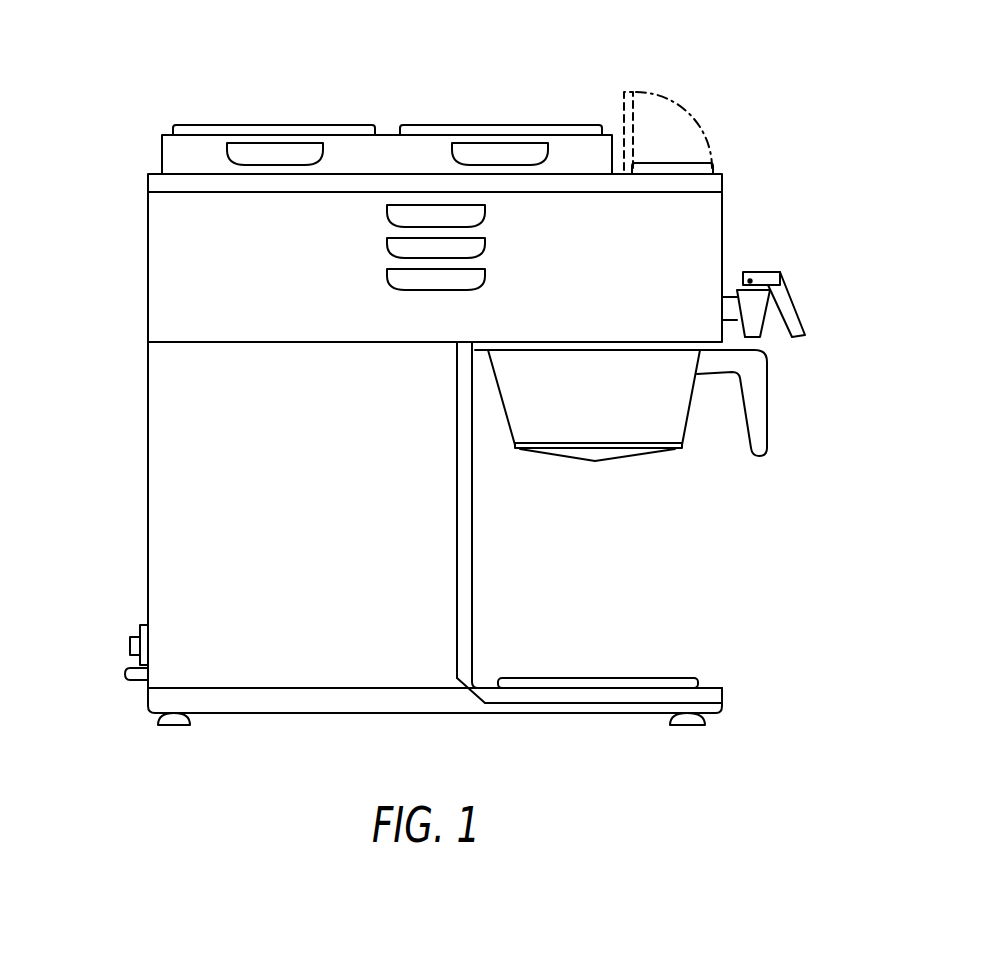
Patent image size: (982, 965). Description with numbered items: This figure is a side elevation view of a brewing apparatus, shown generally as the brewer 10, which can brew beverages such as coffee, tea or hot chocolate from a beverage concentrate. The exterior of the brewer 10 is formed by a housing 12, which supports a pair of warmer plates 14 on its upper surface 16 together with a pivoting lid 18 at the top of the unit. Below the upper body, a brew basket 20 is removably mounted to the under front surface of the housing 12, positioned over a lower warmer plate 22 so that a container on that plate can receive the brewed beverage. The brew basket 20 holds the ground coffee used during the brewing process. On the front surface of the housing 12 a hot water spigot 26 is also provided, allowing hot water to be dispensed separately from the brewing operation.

The brewer 10 is at (745, 222).
The housing 12 is at (148, 503).
The warmer plates 14 is at (205, 128).
The upper surface 16 is at (392, 132).
The pivoting lid 18 is at (633, 92).
The brew basket 20 is at (653, 417).
The warmer plate 22 is at (598, 678).
The hot water spigot 26 is at (790, 305).